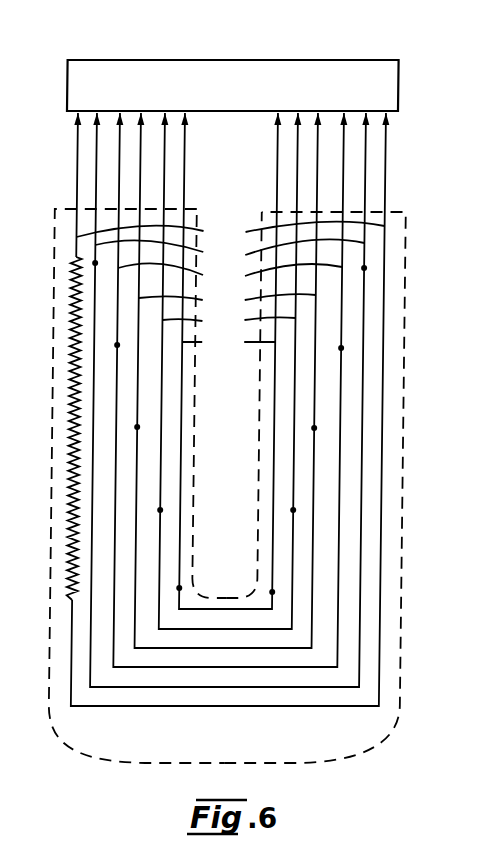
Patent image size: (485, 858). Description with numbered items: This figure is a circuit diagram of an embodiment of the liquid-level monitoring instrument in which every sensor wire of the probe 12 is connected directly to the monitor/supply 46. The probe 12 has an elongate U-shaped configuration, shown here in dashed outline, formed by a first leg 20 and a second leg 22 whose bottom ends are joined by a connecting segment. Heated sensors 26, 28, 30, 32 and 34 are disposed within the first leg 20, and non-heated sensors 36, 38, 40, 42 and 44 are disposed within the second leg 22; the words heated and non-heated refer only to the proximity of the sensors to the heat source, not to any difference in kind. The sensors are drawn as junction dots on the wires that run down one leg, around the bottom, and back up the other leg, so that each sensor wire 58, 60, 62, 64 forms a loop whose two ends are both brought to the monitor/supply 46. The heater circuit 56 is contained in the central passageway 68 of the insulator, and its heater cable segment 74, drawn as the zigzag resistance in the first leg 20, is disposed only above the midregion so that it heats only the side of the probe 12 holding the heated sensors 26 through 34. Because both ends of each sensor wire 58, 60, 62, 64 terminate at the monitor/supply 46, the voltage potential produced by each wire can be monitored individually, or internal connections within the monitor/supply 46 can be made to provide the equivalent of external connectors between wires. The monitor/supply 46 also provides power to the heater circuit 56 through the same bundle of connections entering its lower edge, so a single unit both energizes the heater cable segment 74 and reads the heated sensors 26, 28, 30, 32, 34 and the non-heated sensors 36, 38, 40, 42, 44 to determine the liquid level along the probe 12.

The probe 12 is at (400, 178).
The first leg 20 is at (54, 245).
The second leg 22 is at (409, 218).
The heated sensor 26 is at (97, 263).
The heated sensor 28 is at (120, 345).
The heated sensor 30 is at (141, 427).
The heated sensor 32 is at (165, 510).
The heated sensor 34 is at (185, 588).
The non-heated sensor 36 is at (366, 268).
The non-heated sensor 38 is at (344, 348).
The non-heated sensor 40 is at (318, 428).
The non-heated sensor 42 is at (298, 510).
The non-heated sensor 44 is at (278, 592).
The monitor/supply 46 is at (307, 60).
The heater circuit 56 is at (228, 409).
The sensor wire 58 is at (228, 400).
The sensor wire 60 is at (229, 390).
The sensor wire 62 is at (226, 380).
The sensor wire 64 is at (228, 371).
The passageway 68 is at (229, 361).
The heater cable segment 74 is at (72, 372).